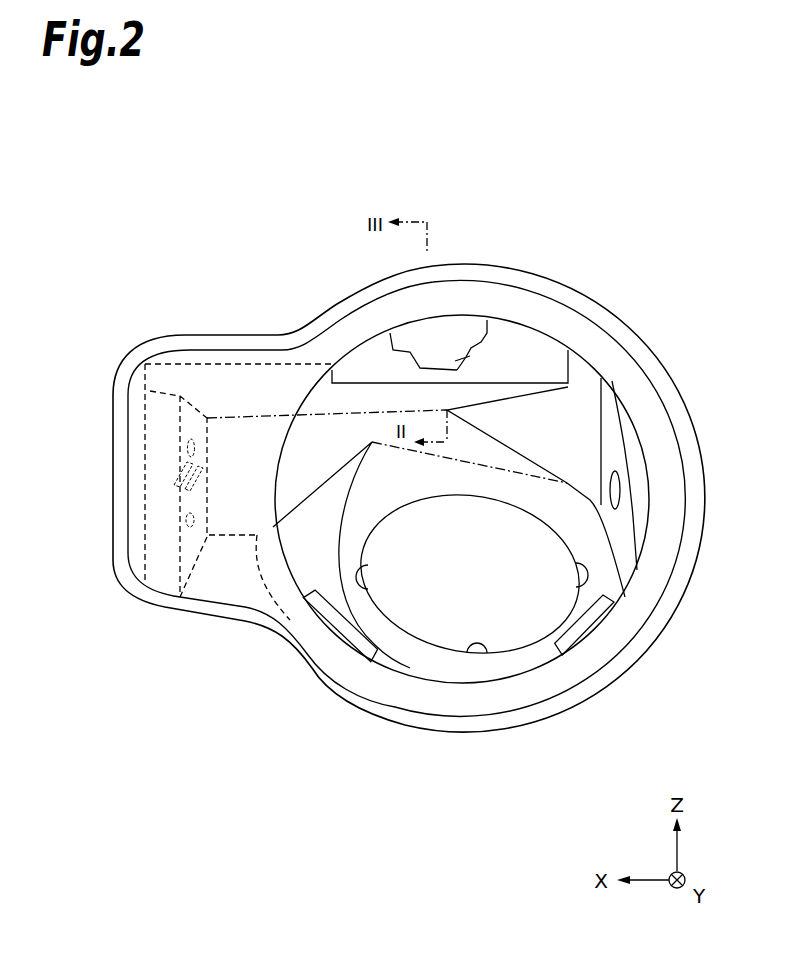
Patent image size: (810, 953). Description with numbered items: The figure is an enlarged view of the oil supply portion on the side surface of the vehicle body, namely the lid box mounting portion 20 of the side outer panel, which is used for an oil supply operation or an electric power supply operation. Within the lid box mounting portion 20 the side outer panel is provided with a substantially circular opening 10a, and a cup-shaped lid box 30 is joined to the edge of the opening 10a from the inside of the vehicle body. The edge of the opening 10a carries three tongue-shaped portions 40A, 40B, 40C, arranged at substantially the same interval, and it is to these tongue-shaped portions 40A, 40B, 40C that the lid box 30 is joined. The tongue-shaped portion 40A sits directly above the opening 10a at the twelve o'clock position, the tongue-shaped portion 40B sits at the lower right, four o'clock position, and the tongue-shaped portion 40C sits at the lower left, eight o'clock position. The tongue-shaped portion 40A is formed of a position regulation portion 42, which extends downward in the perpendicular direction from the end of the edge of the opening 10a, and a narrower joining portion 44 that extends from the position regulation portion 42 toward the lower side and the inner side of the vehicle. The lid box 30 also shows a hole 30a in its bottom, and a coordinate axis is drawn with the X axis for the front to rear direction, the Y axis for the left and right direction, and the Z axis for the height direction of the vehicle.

The lid box mounting portion 20 is at (198, 270).
The opening 10a is at (538, 336).
The lid box 30 is at (590, 543).
The hole of plate member 30a is at (478, 646).
The tongue-shaped portion 40A is at (476, 271).
The position regulation portion 42 is at (443, 330).
The joining portion 44 is at (485, 350).
The tongue-shaped portion 40B is at (340, 628).
The tongue-shaped portion 40C is at (590, 627).